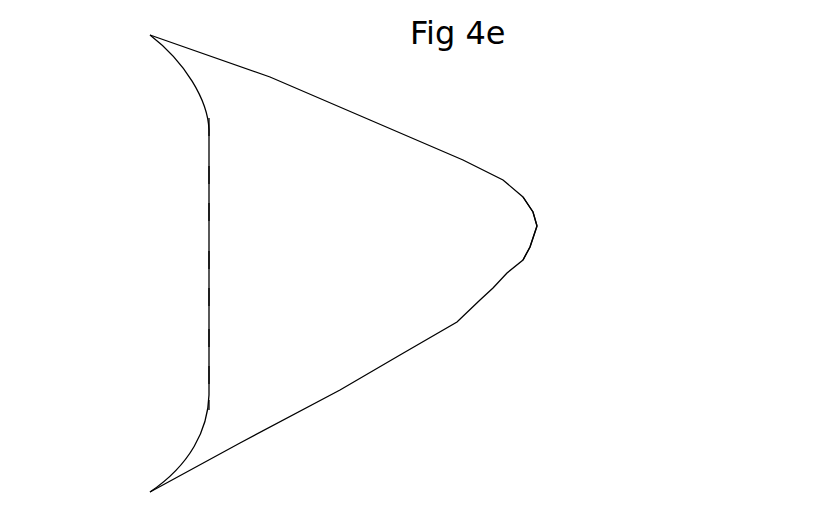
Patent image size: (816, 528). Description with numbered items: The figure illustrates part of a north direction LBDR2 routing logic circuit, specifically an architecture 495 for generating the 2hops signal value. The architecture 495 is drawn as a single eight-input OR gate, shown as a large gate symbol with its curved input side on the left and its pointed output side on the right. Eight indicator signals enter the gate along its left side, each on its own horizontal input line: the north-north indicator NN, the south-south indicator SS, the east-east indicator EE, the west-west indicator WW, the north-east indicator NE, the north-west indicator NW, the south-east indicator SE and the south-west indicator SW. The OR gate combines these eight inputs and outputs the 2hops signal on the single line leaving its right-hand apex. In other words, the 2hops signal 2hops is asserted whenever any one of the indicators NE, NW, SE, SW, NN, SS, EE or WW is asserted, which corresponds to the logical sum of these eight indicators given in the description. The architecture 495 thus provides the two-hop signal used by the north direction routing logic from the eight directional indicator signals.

The architecture 495 is at (455, 324).
The 2hops signal 2hops is at (537, 228).
The north-north indicator NN is at (208, 127).
The south-south indicator SS is at (208, 175).
The east-east indicator EE is at (208, 212).
The west-west indicator WW is at (209, 260).
The north-east indicator NE is at (209, 297).
The north-west indicator NW is at (209, 338).
The south-east indicator SE is at (208, 375).
The south-west indicator SW is at (207, 416).